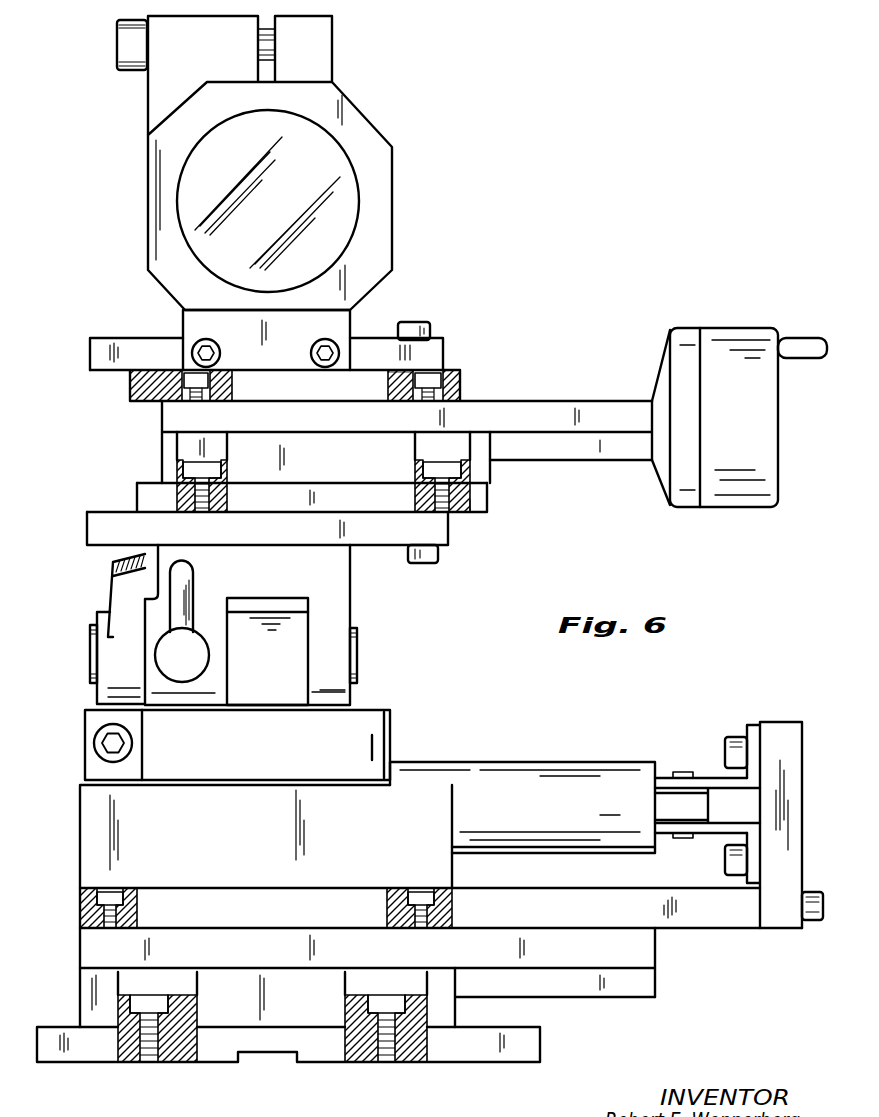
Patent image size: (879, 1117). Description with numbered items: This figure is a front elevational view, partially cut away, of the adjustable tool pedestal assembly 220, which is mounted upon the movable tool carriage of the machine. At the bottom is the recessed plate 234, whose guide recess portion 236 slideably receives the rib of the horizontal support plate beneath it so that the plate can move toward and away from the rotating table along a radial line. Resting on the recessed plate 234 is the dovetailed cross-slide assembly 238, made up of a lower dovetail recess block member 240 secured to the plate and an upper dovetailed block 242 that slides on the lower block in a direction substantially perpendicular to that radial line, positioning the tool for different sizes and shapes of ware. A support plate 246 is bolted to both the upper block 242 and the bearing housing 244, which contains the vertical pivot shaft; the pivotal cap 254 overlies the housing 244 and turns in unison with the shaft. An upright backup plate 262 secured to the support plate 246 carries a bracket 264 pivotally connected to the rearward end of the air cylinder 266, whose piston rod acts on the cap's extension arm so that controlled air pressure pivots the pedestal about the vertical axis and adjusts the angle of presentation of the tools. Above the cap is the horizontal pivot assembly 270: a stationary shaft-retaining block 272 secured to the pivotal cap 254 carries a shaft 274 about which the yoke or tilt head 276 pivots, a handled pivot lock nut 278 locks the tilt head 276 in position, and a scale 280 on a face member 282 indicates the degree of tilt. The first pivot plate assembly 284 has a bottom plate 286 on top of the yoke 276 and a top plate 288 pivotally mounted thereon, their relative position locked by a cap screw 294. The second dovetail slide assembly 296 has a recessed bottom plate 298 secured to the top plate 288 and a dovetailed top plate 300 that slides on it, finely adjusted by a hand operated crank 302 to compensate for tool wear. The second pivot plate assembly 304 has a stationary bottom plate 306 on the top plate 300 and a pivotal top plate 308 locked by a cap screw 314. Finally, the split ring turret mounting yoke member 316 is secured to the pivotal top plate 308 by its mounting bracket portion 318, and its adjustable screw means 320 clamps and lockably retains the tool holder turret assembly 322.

The adjustable tool pedestal assembly 220 is at (398, 756).
The recessed plate 234 is at (52, 1027).
The guide recess portion 236 is at (249, 1054).
The dovetailed cross-slide assembly 238 is at (74, 958).
The lower dovetail recess block member 240 is at (445, 1010).
The upper dovetailed block 242 is at (645, 958).
The bearing housing 244 is at (448, 870).
The support plate 246 is at (722, 918).
The pivotal cap 254 is at (387, 722).
The upright backup plate 262 is at (783, 722).
The bracket 264 is at (703, 778).
The air cylinder 266 is at (598, 768).
The horizontal pivot assembly 270 is at (356, 620).
The stationary shaft-retaining block 272 is at (296, 675).
The shaft 274 is at (90, 652).
The yoke or tilt head 276 is at (340, 590).
The handled pivot lock nut 278 is at (197, 580).
The scale 280 is at (113, 560).
The face member 282 is at (100, 614).
The first pivot plate assembly 284 is at (131, 506).
The bottom plate 286 is at (449, 538).
The top plate 288 is at (487, 500).
The cap screw 294 is at (438, 556).
The second dovetail slide assembly 296 is at (158, 444).
The recessed bottom plate 298 is at (490, 472).
The dovetailed top plate 300 is at (543, 414).
The hand operated crank 302 is at (676, 352).
The second pivot plate assembly 304 is at (462, 367).
The stationary bottom plate 306 is at (128, 387).
The pivotal top plate 308 is at (88, 354).
The cap screw 314 is at (412, 325).
The split ring turret mounting yoke member 316 is at (385, 255).
The mounting bracket portion 318 is at (190, 323).
The adjustable screw means 320 is at (117, 40).
The tool holder turret assembly 322 is at (347, 188).